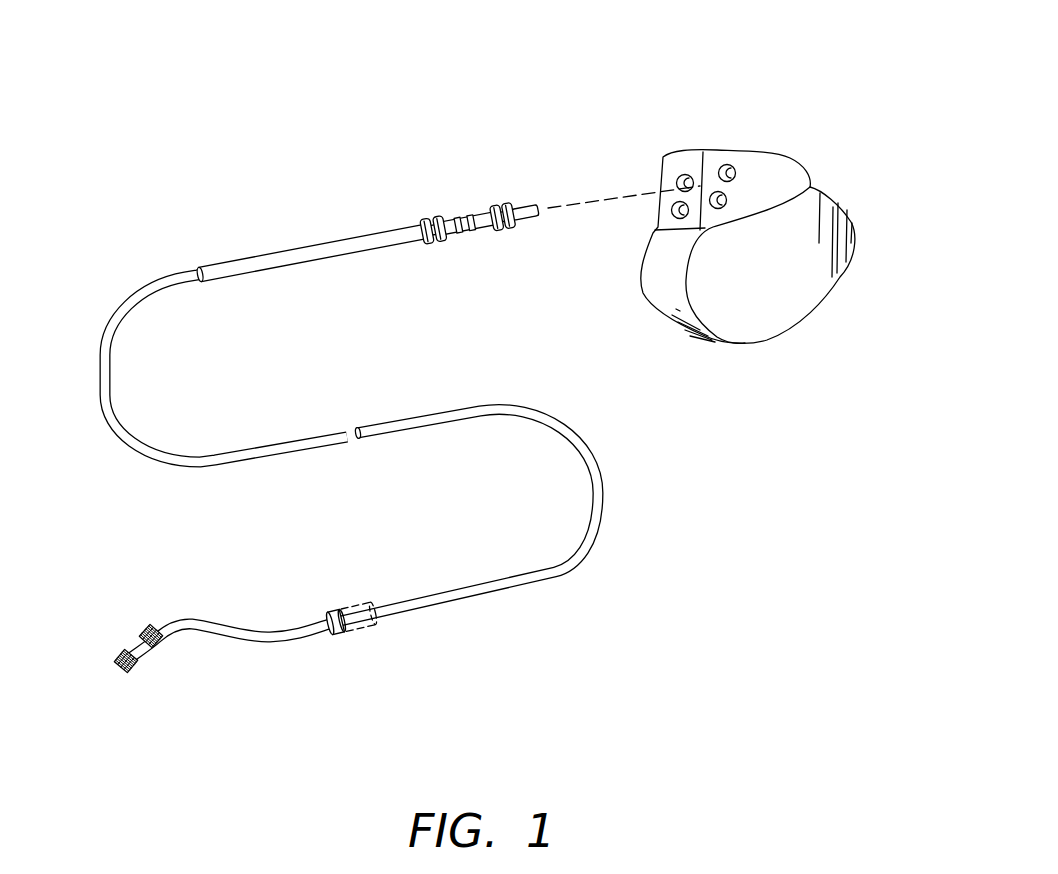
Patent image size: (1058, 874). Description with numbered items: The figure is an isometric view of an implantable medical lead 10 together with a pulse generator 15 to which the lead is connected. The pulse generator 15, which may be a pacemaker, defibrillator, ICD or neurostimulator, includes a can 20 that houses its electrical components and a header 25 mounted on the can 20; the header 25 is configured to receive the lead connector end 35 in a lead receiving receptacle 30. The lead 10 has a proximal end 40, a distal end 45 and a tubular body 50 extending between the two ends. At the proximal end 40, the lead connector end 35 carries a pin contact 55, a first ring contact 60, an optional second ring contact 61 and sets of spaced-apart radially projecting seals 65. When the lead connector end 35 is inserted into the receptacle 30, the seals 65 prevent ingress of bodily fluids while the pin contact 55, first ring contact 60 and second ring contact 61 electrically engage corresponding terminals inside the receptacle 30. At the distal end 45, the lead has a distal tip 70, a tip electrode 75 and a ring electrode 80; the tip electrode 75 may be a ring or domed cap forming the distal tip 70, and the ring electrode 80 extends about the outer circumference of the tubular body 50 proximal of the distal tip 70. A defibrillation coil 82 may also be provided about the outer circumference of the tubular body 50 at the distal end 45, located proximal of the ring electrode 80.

The lead 10 is at (371, 409).
The pulse generator 15 is at (775, 180).
The can 20 is at (828, 190).
The header 25 is at (767, 153).
The lead receiving receptacle 30 is at (703, 158).
The lead connector end 35 is at (548, 249).
The proximal end 40 is at (600, 138).
The distal end 45 is at (189, 665).
The tubular body 50 is at (560, 570).
The pin contact 55 is at (537, 213).
The first ring contact 60 is at (472, 237).
The second ring contact 61 is at (457, 243).
The seals 65 is at (430, 241).
The distal tip 70 is at (116, 665).
The tip electrode 75 is at (136, 668).
The ring electrode 80 is at (147, 629).
The defibrillation coil 82 is at (362, 632).